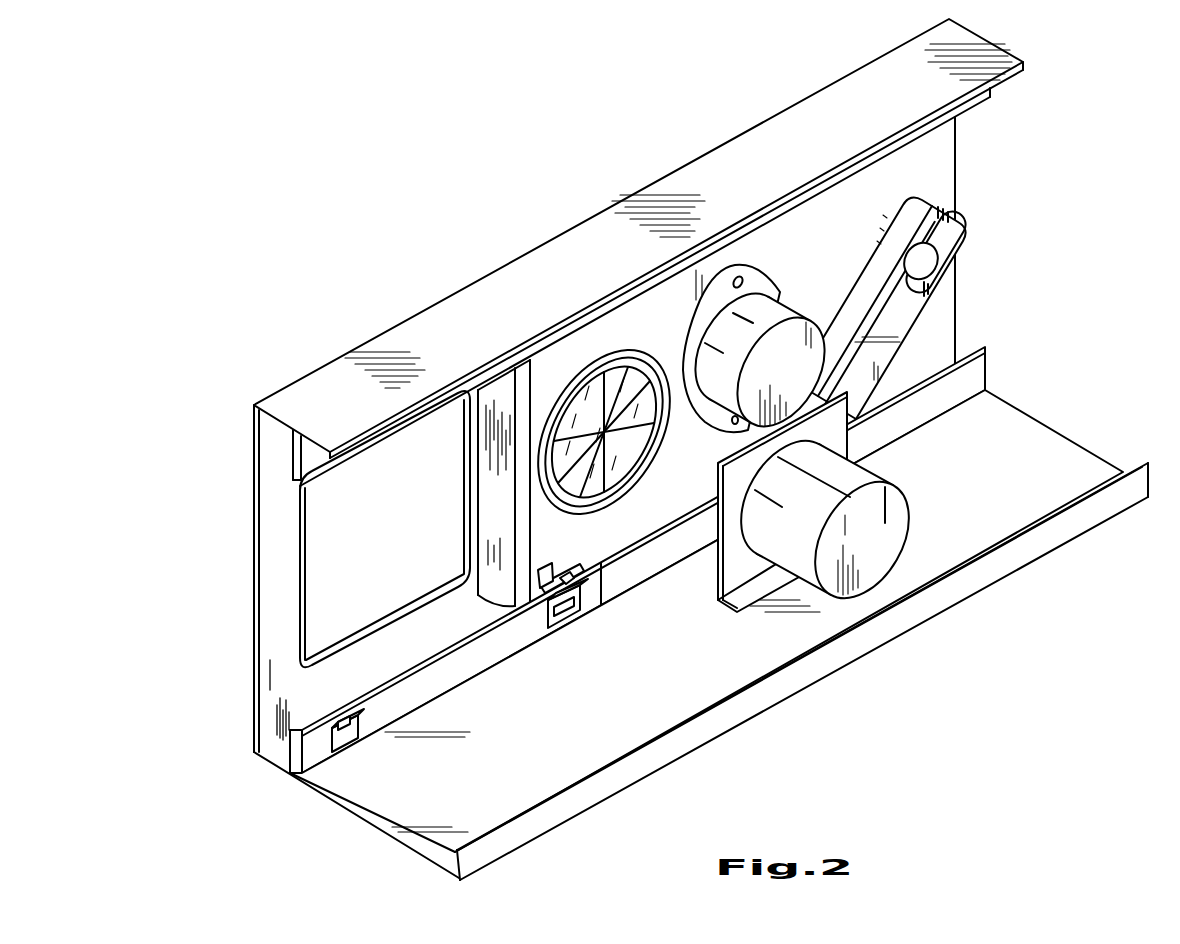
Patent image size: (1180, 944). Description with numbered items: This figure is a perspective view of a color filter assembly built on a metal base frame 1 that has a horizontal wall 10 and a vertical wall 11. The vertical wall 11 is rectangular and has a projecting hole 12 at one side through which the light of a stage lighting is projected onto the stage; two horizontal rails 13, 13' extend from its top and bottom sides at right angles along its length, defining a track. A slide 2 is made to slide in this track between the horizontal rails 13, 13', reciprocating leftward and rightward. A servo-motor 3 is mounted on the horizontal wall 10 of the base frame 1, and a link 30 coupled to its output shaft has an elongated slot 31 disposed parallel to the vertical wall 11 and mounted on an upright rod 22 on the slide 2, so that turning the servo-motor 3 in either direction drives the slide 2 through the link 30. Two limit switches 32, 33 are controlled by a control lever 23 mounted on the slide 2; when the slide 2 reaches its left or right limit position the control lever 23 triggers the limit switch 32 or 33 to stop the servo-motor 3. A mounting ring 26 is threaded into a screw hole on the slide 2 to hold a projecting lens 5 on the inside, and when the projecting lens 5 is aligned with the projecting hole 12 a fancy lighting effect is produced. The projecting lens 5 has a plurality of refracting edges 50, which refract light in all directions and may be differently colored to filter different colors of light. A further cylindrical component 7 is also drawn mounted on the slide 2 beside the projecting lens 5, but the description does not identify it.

The metal base frame 1 is at (797, 707).
The slide 2 is at (960, 160).
The servo-motor 3 is at (880, 560).
The projecting lens 5 is at (638, 430).
The lamp 7 is at (723, 323).
The horizontal wall 10 is at (1067, 462).
The vertical wall 11 is at (262, 553).
The projecting hole 12 is at (390, 615).
The horizontal rail 13 is at (604, 252).
The horizontal rail 13' is at (568, 560).
The upright rod 22 is at (913, 268).
The control lever 23 is at (560, 582).
The mounting ring 26 is at (598, 378).
The link 30 is at (960, 238).
The elongated slot 31 is at (887, 318).
The limit switch 32 is at (345, 745).
The limit switch 33 is at (557, 630).
The refracting edges 50 is at (620, 463).